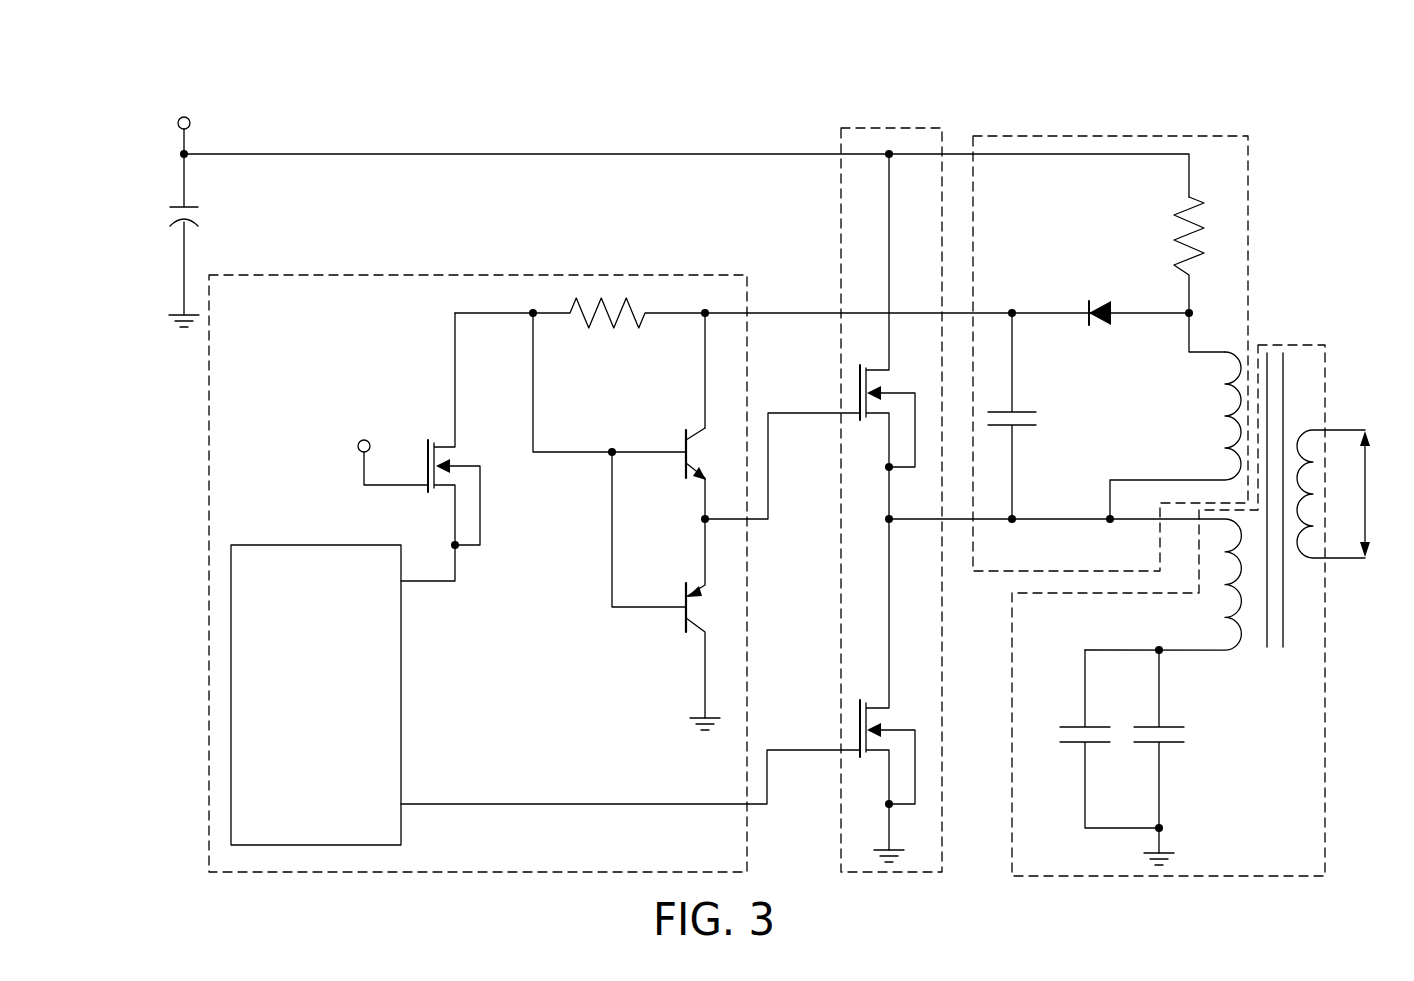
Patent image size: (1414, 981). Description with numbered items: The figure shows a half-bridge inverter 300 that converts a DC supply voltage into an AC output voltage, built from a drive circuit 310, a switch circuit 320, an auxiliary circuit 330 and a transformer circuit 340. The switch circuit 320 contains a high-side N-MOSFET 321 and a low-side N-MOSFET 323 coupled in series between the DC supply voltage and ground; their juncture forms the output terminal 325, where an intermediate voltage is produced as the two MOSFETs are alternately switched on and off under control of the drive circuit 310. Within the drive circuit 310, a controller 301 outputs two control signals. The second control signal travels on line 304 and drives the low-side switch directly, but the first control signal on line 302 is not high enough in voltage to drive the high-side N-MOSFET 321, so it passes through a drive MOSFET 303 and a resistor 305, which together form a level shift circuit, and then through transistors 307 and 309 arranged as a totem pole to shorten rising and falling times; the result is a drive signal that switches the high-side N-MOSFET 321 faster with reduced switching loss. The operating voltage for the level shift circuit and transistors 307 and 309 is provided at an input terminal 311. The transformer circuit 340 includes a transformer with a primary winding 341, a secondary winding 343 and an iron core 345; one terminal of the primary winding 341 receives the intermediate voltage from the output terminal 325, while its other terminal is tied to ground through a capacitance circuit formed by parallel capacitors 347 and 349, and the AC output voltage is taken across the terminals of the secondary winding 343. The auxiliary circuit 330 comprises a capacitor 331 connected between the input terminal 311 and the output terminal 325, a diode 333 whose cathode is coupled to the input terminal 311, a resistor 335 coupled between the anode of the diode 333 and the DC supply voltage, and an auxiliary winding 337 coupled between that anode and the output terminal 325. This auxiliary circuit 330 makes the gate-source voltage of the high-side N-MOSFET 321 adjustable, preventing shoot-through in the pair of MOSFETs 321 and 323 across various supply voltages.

The half-bridge inverter 300 is at (525, 90).
The controller 301 is at (283, 545).
The line 302 is at (424, 583).
The drive MOSFET 303 is at (428, 455).
The line 304 is at (424, 806).
The resistor 305 is at (638, 328).
The transistor 307 is at (686, 466).
The transistor 309 is at (686, 624).
The drive circuit 310 is at (313, 275).
The input terminal 311 is at (705, 313).
The switch circuit 320 is at (841, 238).
The high-side N-MOSFET 321 is at (866, 370).
The low-side N-MOSFET 323 is at (866, 708).
The output terminal 325 is at (889, 519).
The auxiliary circuit 330 is at (1248, 238).
The capacitor 331 is at (1024, 428).
The diode 333 is at (1102, 326).
The resistor 335 is at (1196, 262).
The auxiliary winding 337 is at (1225, 400).
The transformer circuit 340 is at (1325, 365).
The primary winding 341 is at (1225, 606).
The secondary winding 343 is at (1300, 432).
The iron core 345 is at (1266, 648).
The capacitor 347 is at (1098, 745).
The capacitor 349 is at (1172, 745).